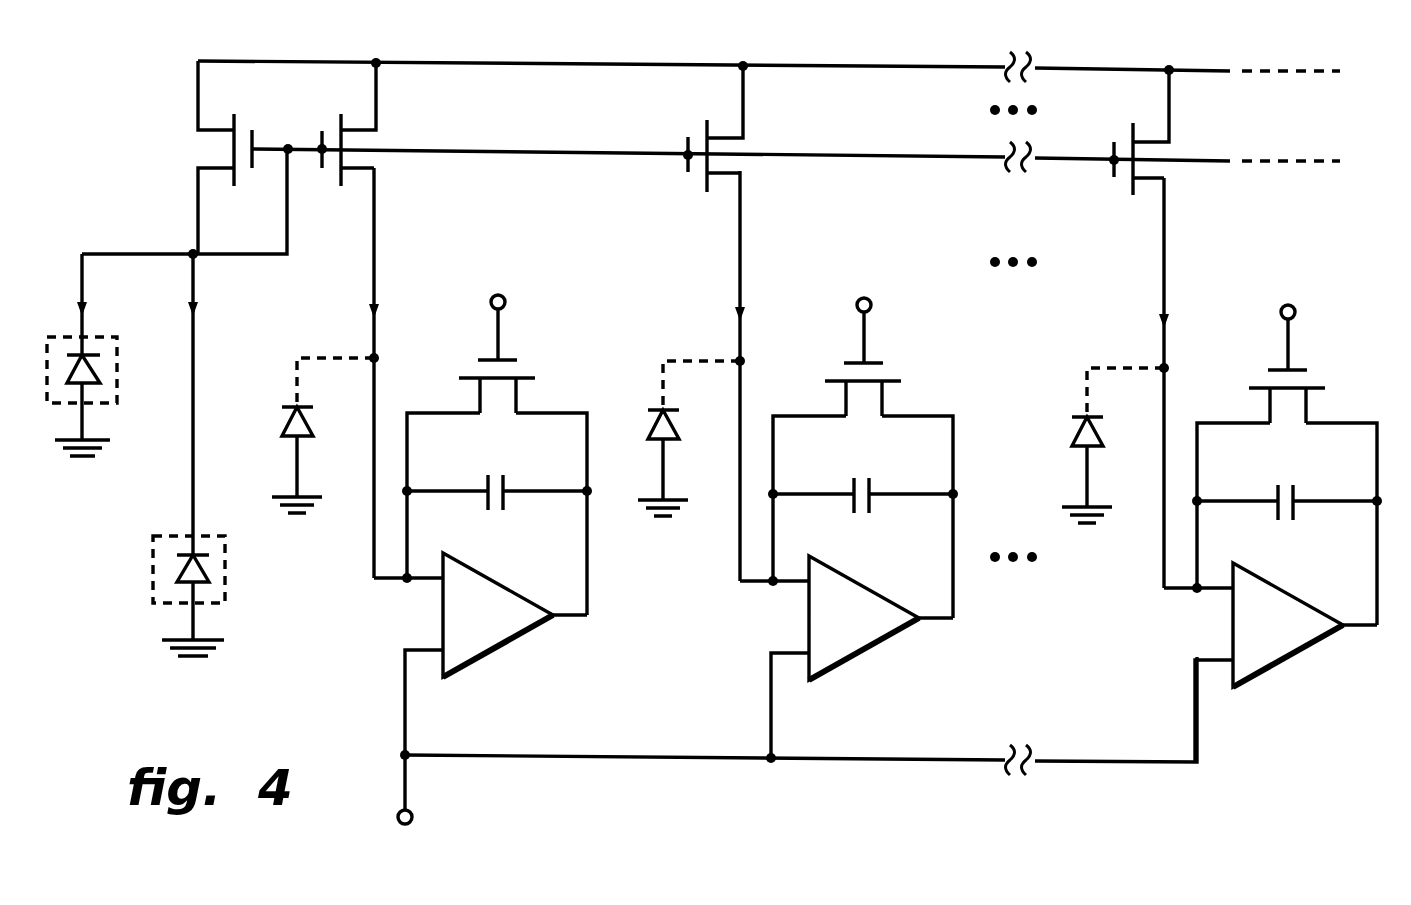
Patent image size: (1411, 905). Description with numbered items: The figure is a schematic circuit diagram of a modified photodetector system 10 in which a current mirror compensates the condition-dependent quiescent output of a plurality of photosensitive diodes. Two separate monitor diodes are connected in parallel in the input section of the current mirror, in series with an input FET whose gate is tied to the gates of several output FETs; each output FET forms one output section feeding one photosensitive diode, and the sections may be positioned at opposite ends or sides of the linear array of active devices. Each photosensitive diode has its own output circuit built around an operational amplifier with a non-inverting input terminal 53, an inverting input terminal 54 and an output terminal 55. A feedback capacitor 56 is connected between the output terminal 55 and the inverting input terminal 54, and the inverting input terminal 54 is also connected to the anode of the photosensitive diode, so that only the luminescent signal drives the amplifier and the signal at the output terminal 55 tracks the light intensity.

The photodetector system 10 is at (717, 430).
The non-inverting input terminal 53 is at (430, 653).
The inverting input terminal 54 is at (430, 576).
The output terminal 55 is at (571, 618).
The feedback capacitor 56 is at (510, 490).